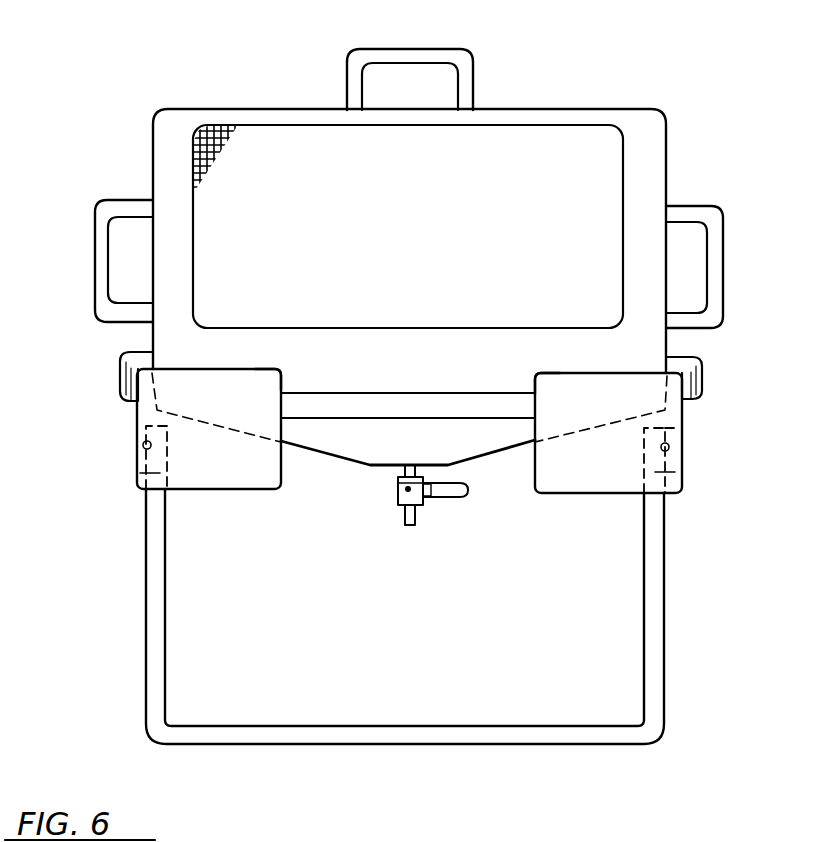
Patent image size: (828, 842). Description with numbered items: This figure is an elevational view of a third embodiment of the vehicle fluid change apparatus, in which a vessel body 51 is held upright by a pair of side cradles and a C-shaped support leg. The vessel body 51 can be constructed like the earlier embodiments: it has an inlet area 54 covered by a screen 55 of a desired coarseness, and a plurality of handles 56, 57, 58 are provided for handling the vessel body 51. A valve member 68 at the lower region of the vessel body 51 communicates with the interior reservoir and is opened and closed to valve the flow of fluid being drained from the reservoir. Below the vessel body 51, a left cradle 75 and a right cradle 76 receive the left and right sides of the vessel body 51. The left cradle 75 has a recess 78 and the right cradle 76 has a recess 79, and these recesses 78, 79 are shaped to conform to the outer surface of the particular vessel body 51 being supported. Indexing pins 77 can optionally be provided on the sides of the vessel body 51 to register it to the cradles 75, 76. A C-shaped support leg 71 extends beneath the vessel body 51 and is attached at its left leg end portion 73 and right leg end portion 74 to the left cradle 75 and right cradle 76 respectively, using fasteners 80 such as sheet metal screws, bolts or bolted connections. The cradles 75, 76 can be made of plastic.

The vessel body 51 is at (572, 111).
The inlet area 54 is at (468, 166).
The screen 55 is at (440, 380).
The handle 56 is at (93, 258).
The handle 57 is at (455, 48).
The handle 58 is at (723, 261).
The valve member 68 is at (398, 503).
The C-shaped support leg 71 is at (328, 735).
The left leg end portion 73 is at (137, 476).
The right leg end portion 74 is at (658, 470).
The left cradle 75 is at (262, 481).
The right cradle 76 is at (597, 478).
The indexing pin 77 is at (120, 360).
The recess 78 is at (278, 367).
The recess 79 is at (543, 367).
The fastener 80 is at (143, 446).